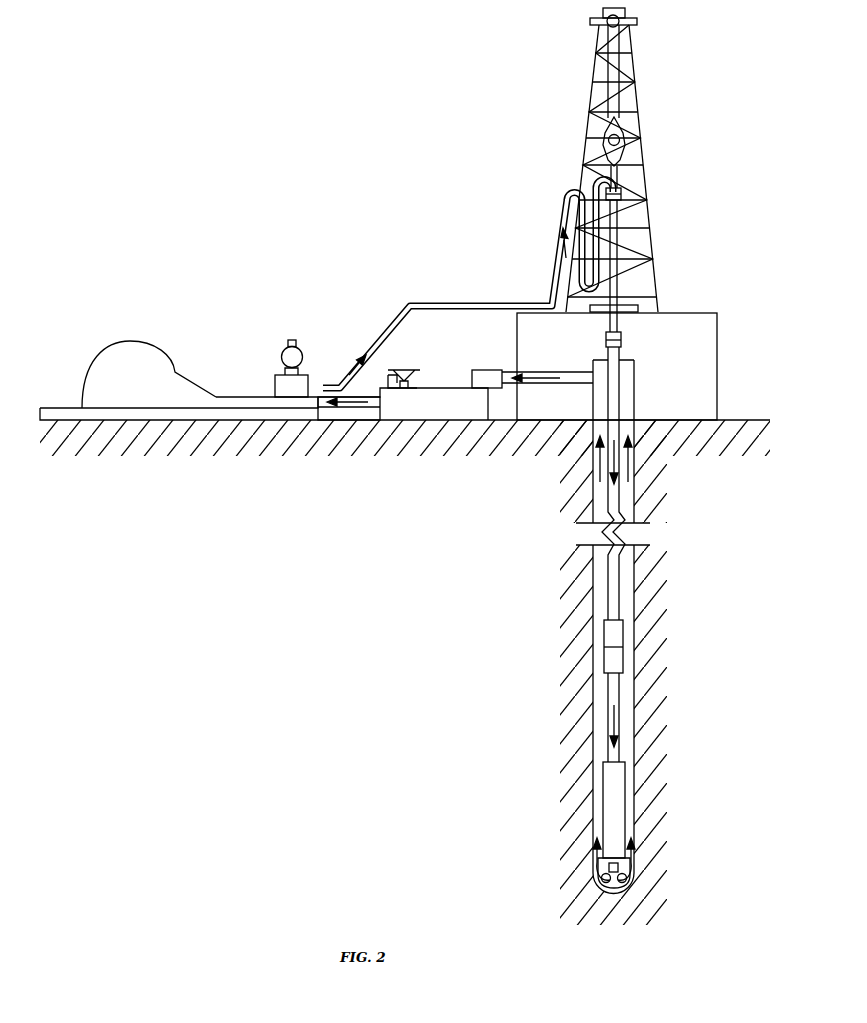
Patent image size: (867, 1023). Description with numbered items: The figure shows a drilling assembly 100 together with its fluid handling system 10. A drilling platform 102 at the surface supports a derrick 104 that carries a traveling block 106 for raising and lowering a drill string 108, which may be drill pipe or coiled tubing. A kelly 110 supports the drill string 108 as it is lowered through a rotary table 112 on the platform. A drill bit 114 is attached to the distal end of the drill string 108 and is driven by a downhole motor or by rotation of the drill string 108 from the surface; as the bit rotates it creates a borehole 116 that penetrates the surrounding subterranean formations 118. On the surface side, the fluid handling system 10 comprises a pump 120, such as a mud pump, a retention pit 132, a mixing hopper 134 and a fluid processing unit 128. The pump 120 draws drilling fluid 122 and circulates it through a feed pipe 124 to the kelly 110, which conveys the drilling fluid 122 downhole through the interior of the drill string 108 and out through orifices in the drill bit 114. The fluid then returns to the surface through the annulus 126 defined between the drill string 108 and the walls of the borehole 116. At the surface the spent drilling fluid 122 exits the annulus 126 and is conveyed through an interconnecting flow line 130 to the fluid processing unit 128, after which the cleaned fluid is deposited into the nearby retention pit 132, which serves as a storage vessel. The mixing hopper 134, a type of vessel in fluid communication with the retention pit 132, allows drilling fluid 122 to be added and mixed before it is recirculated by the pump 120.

The fluid handling system 10 is at (299, 300).
The drilling assembly 100 is at (375, 77).
The drilling platform 102 is at (717, 325).
The derrick 104 is at (637, 93).
The traveling block 106 is at (623, 130).
The drill string 108 is at (616, 508).
The kelly 110 is at (618, 232).
The rotary table 112 is at (640, 310).
The drill bit 114 is at (630, 868).
The borehole 116 is at (637, 588).
The subterranean formations 118 is at (501, 615).
The pump 120 is at (146, 388).
The drilling fluid 122 is at (542, 373).
The feed pipe 124 is at (421, 305).
The annulus 126 is at (626, 725).
The fluid processing unit 128 is at (488, 368).
The interconnecting flow line 130 is at (577, 383).
The retention pit 132 is at (467, 413).
The mixing hopper 134 is at (395, 375).